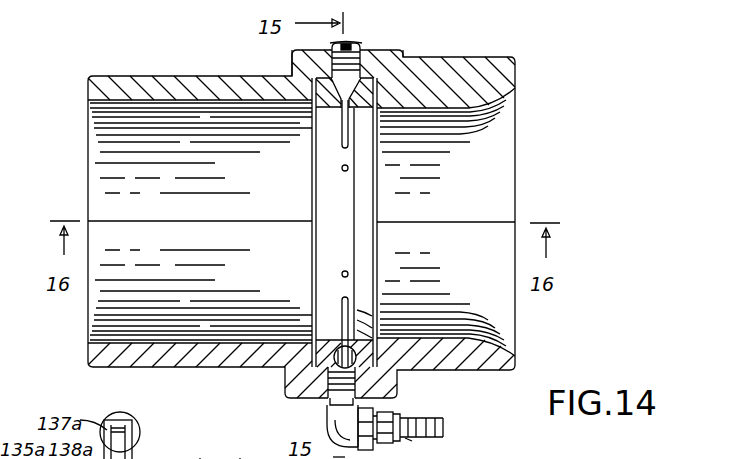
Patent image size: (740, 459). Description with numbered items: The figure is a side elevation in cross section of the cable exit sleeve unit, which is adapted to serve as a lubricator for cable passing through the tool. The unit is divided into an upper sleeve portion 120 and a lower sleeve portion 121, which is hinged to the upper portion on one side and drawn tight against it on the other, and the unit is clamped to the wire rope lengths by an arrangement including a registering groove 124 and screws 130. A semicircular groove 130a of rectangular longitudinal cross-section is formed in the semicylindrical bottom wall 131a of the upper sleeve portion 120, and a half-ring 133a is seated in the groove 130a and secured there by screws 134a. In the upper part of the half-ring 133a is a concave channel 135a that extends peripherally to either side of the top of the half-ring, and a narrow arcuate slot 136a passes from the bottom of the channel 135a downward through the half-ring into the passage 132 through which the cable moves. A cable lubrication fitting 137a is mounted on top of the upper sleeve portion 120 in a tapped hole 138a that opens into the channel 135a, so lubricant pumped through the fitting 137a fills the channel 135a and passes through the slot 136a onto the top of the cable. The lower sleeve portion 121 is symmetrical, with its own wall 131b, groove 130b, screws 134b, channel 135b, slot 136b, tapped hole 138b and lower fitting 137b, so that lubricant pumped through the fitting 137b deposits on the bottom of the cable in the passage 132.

The upper sleeve portion 120 is at (151, 69).
The lower sleeve portion 121 is at (86, 371).
The semicylindrical bottom wall 131a is at (108, 141).
The semicylindrical wall of lower sleeve portion 131b is at (112, 312).
The passage 132 is at (494, 197).
The half-ring 133a is at (400, 56).
The semicircular groove 130a is at (292, 77).
The semicircular groove of lower sleeve portion 130b is at (316, 362).
The cable lubrication fitting 137a is at (318, 108).
The concave channel 135a is at (347, 97).
The tapped hole 138a is at (333, 47).
The narrow arcuate slot 136a is at (343, 136).
The screws 134a is at (343, 170).
The screws of lower sleeve portion 134b is at (341, 275).
The arcuate slot of lower sleeve portion 136b is at (350, 305).
The concave channel of lower sleeve portion 135b is at (330, 380).
The tapped hole of lower sleeve portion 138b is at (365, 384).
The registering groove 124 is at (207, 450).
The screws 130 is at (249, 450).
The lower cable lubrication fitting 137b is at (408, 440).